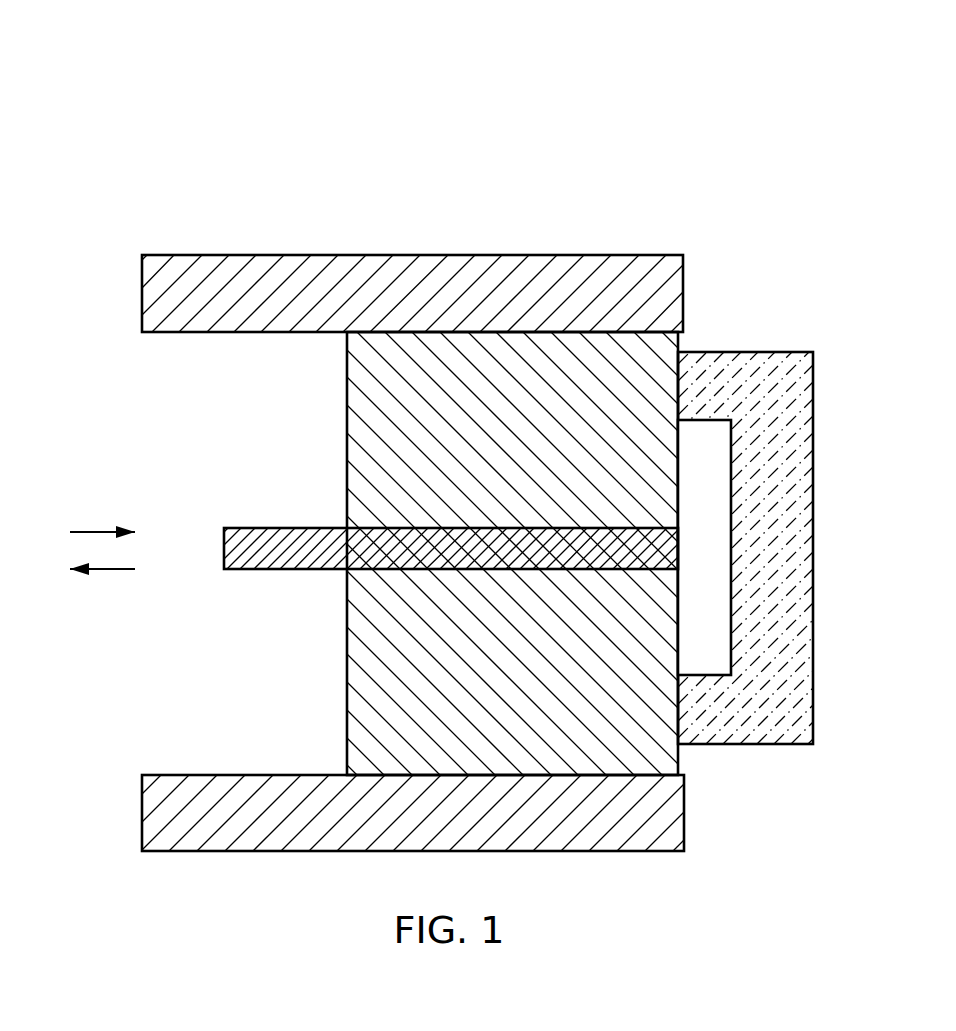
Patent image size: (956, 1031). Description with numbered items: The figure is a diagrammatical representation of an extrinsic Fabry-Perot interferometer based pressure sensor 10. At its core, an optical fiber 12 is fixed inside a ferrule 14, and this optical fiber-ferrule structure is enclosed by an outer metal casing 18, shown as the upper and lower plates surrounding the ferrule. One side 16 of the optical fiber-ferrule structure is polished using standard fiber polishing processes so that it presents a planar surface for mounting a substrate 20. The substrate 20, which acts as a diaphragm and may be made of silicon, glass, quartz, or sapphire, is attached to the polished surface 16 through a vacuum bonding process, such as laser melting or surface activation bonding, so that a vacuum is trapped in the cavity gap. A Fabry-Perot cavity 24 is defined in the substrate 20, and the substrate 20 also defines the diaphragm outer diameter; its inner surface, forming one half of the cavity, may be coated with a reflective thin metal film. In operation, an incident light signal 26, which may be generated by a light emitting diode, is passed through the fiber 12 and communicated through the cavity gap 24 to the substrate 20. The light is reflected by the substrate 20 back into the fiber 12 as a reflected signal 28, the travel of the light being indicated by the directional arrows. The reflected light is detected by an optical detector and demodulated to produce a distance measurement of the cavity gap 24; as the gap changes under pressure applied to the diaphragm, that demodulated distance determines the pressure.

The EFPI based pressure sensor 10 is at (780, 74).
The optical fiber 12 is at (283, 528).
The ferrule 14 is at (347, 672).
The polished side 16 is at (681, 640).
The outer metal casing 18 is at (455, 262).
The substrate 20 is at (790, 356).
The Fabry-Perot cavity 24 is at (678, 539).
The incident light signal 26 is at (95, 530).
The reflected signal 28 is at (110, 572).